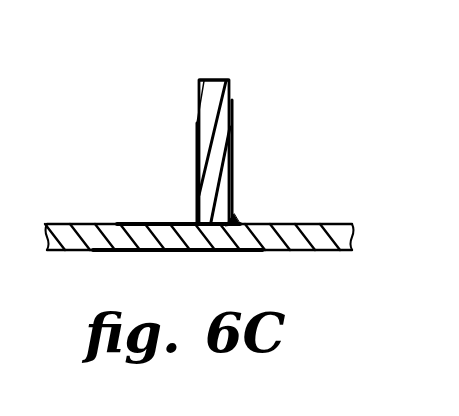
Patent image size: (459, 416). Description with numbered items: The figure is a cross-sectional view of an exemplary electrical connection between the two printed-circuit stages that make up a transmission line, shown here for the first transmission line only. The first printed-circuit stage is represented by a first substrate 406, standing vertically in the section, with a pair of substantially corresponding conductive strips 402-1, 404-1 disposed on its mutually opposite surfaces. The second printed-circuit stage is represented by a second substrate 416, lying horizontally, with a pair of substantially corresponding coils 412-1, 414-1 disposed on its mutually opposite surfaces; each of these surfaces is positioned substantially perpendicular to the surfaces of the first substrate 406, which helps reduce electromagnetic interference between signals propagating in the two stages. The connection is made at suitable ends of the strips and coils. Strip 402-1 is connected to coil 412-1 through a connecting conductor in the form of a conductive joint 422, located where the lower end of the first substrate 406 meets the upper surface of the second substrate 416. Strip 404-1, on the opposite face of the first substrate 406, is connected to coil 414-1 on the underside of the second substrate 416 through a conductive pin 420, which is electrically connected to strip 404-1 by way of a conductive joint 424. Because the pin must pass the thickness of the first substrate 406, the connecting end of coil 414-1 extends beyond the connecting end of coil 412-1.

The conductive strip 402-1 is at (196, 135).
The conductive strip 404-1 is at (233, 110).
The first substrate 406 is at (212, 90).
The coil 412-1 is at (128, 223).
The coil 414-1 is at (138, 252).
The second substrate 416 is at (339, 224).
The conductive pin 420 is at (253, 252).
The conductive joint 422 is at (192, 223).
The conductive joint 424 is at (232, 223).